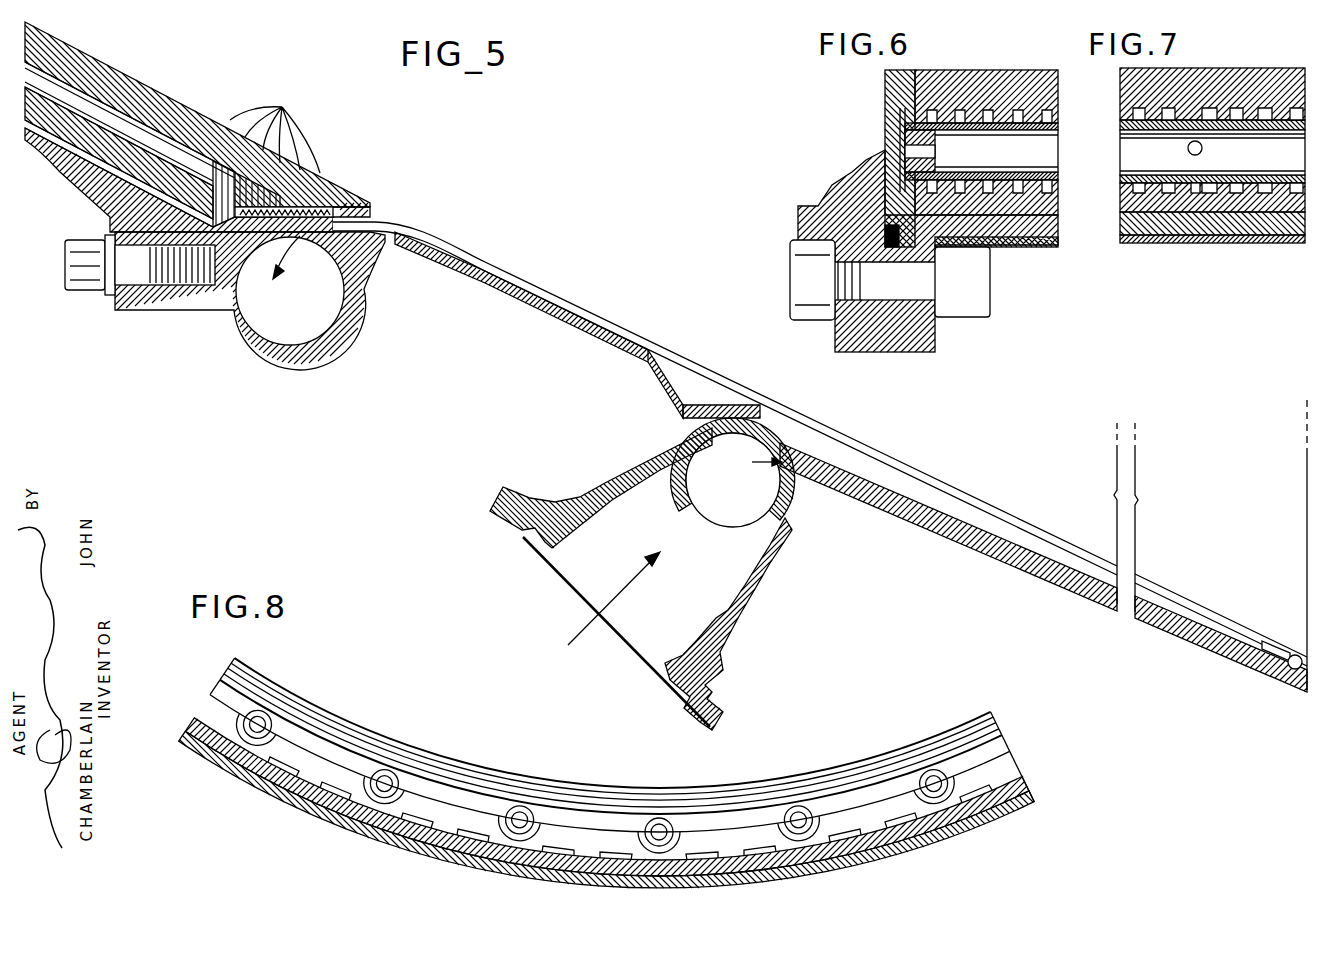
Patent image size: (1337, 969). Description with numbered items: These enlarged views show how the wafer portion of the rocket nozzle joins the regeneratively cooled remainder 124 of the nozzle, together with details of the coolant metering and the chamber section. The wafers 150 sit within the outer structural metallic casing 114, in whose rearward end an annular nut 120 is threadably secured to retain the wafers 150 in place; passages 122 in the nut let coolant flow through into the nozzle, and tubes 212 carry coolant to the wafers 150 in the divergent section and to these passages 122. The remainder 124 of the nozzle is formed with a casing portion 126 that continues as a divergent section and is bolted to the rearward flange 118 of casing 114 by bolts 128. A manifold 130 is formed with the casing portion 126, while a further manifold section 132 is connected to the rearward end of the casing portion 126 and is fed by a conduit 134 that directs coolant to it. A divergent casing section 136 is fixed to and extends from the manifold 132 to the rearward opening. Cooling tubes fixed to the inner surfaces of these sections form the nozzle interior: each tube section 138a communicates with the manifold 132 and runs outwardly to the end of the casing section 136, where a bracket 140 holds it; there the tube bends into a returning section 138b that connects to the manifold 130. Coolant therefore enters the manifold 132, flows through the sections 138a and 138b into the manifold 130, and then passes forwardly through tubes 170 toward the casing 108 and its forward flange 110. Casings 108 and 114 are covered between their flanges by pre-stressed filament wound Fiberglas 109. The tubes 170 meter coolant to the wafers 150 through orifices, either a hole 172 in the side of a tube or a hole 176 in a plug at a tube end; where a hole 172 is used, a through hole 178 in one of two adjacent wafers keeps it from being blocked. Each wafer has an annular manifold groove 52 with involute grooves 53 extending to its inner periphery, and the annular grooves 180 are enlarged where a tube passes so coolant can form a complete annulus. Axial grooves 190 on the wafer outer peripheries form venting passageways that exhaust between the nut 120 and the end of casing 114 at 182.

In FIG. 5, the tubes 212 is at (110, 115).
In FIG. 5, the passages 122 is at (266, 154).
In FIG. 5, the annular nut 120 is at (350, 192).
In FIG. 5, the venting passageway exhaust 182 is at (373, 211).
In FIG. 5, the remainder of the nozzle 124 is at (483, 264).
In FIG. 5, the outer structural metallic casing 114 is at (43, 128).
In FIG. 5, the bolts 128 is at (77, 273).
In FIG. 5, the rearward flange 118 is at (133, 300).
In FIG. 5, the manifold 130 is at (256, 318).
In FIG. 5, the casing portion 126 is at (523, 297).
In FIG. 5, the returning tube section 138b is at (648, 347).
In FIG. 5, the tube section 138a is at (960, 506).
In FIG. 5, the conduit 134 is at (596, 528).
In FIG. 5, the manifold section 132 is at (765, 505).
In FIG. 5, the divergent casing section 136 is at (1010, 552).
In FIG. 5, the bracket 140 is at (1296, 658).
In FIG. 6, the wafers 150 is at (962, 70).
In FIG. 7, the wafers 150 is at (1257, 77).
In FIG. 8, the wafers 150 is at (813, 773).
In FIG. 6, the hole 176 is at (937, 153).
In FIG. 6, the structural metallic casing 108 is at (1027, 227).
In FIG. 8, the structural metallic casing 108 is at (497, 860).
In FIG. 6, the flange 110 is at (930, 344).
In FIG. 7, the hole 172 is at (1200, 154).
In FIG. 7, the through hole 178 is at (1202, 192).
In FIG. 8, the grooves 53 is at (343, 730).
In FIG. 8, the annular manifold groove 52 is at (433, 800).
In FIG. 8, the tubes 170 is at (520, 812).
In FIG. 8, the axial grooves 190 is at (320, 793).
In FIG. 8, the filament wound Fiberglas 109 is at (770, 882).
In FIG. 8, the annular grooves 180 is at (997, 752).